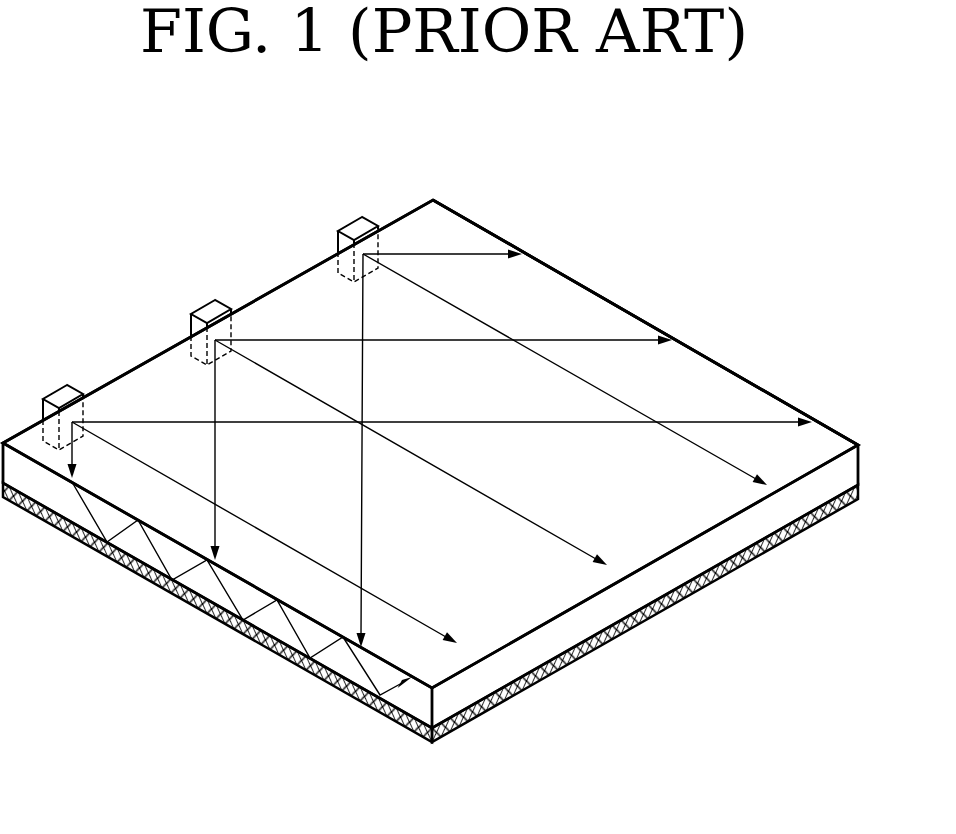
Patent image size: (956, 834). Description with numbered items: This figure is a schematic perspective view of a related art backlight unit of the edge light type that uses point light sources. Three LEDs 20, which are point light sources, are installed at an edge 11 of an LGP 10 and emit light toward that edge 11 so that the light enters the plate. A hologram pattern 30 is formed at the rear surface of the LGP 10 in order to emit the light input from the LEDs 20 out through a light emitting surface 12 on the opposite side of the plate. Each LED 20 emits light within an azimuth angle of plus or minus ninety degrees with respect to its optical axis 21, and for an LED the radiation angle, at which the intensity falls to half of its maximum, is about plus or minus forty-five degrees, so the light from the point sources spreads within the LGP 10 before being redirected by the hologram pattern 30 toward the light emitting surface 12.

The LGP 10 is at (763, 392).
The edge 11 is at (403, 213).
The light emitting surface 12 is at (697, 372).
The LEDs 20 is at (78, 392).
The optical axis 21 is at (432, 633).
The hologram pattern 30 is at (200, 610).